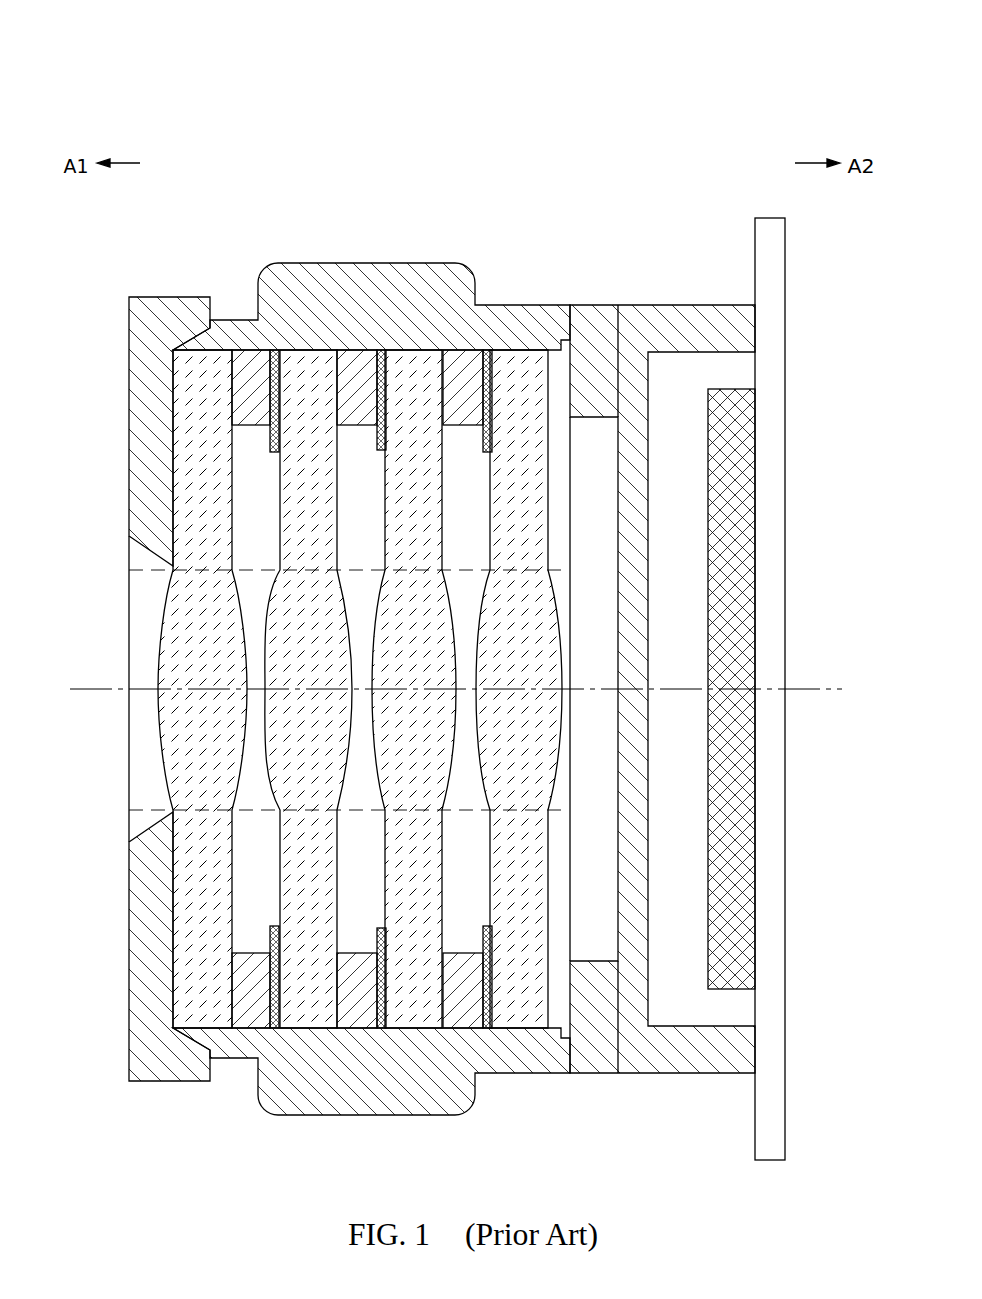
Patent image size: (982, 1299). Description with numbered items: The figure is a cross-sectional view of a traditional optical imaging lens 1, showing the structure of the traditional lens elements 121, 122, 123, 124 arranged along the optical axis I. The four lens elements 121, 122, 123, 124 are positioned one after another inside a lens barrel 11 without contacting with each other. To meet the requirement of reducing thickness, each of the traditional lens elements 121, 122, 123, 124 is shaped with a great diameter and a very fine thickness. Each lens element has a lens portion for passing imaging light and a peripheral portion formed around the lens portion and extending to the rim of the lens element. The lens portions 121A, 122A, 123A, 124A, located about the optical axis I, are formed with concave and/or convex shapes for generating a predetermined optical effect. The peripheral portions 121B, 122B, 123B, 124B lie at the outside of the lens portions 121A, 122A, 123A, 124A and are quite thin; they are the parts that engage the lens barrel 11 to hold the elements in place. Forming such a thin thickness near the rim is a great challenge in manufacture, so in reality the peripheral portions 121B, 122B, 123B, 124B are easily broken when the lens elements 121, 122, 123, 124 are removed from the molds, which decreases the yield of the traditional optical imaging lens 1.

The traditional optical imaging lens 1 is at (787, 93).
The lens barrel 11 is at (370, 280).
The traditional lens element 121 is at (212, 703).
The lens portion 121A is at (200, 637).
The peripheral portion 121B is at (210, 443).
The traditional lens element 122 is at (302, 712).
The lens portion 122A is at (288, 637).
The peripheral portion 122B is at (305, 365).
The traditional lens element 123 is at (413, 732).
The lens portion 123A is at (393, 637).
The peripheral portion 123B is at (415, 368).
The traditional lens element 124 is at (523, 785).
The lens portion 124A is at (498, 637).
The peripheral portion 124B is at (525, 370).
The optical axis I is at (469, 689).